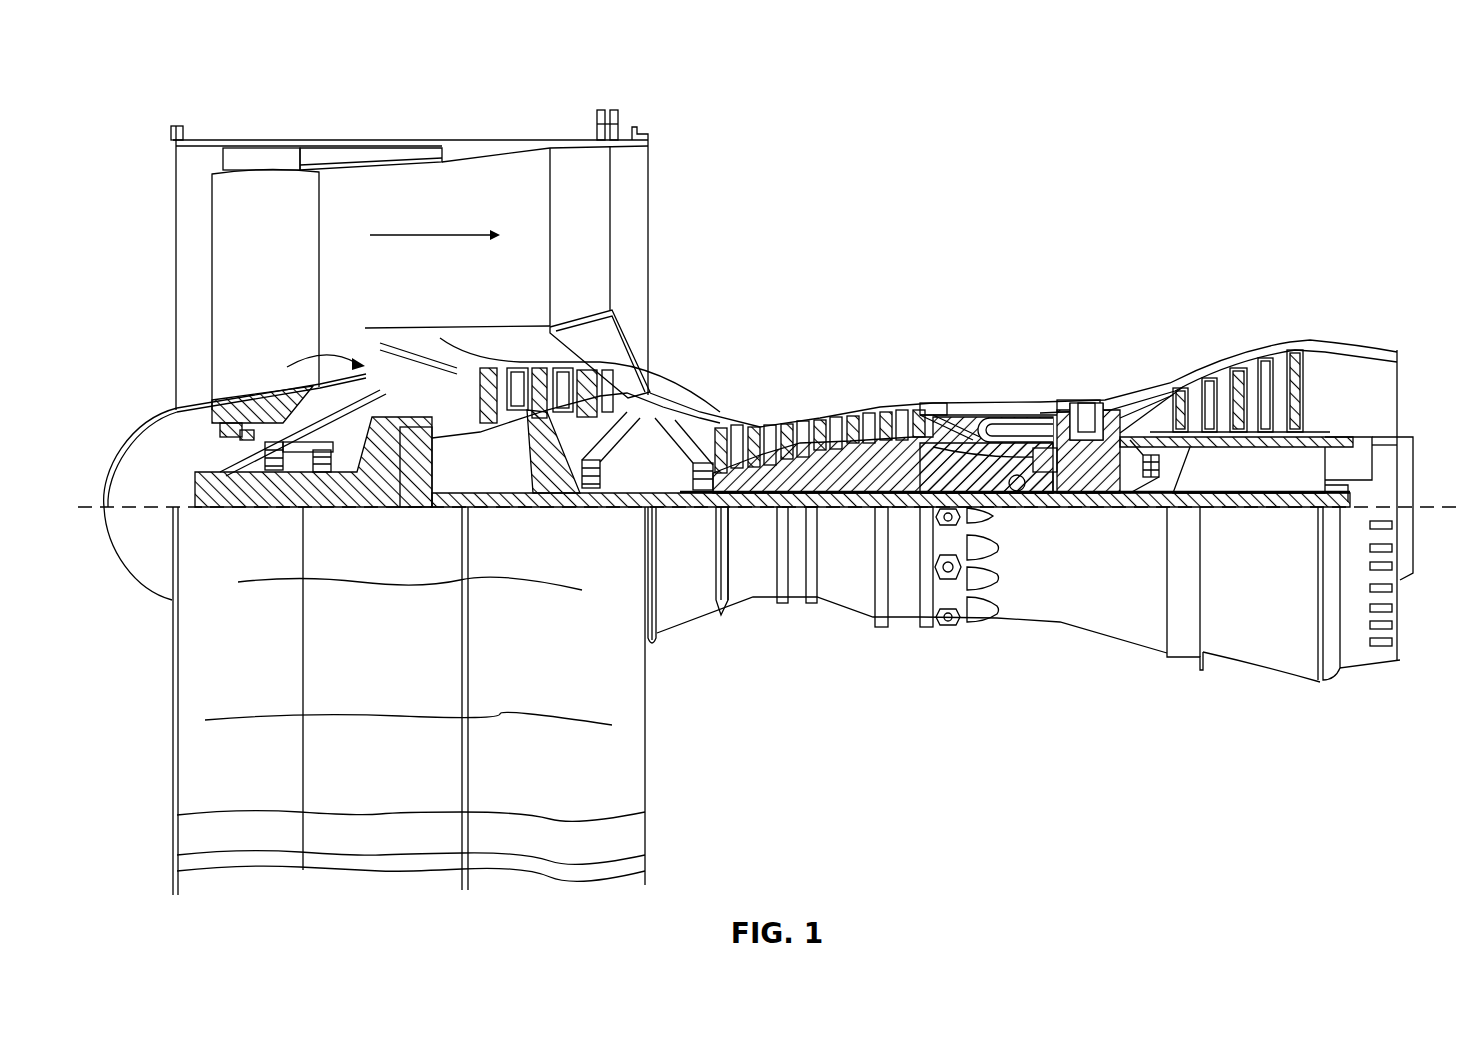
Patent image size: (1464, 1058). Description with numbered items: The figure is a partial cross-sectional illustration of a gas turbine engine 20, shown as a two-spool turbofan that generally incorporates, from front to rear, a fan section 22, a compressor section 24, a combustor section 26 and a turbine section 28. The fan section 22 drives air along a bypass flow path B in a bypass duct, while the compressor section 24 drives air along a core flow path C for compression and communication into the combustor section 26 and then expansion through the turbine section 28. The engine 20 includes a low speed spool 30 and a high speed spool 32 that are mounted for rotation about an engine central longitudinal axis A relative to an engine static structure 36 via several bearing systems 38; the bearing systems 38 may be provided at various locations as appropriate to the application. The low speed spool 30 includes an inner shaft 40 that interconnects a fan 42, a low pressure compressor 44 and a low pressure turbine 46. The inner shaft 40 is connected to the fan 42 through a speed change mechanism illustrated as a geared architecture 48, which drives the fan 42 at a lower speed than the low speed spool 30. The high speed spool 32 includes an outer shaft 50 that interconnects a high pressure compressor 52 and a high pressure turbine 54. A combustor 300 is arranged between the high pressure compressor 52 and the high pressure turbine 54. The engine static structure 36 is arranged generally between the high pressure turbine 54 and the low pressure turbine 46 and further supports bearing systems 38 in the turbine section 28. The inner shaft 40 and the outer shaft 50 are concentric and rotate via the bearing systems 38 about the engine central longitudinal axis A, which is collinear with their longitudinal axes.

The gas turbine engine 20 is at (1224, 174).
The fan section 22 is at (280, 124).
The compressor section 24 is at (842, 360).
The combustor section 26 is at (991, 360).
The turbine section 28 is at (1157, 340).
The low speed spool 30 is at (862, 516).
The high speed spool 32 is at (920, 455).
The engine static structure 36 is at (903, 632).
The bearing systems 38 is at (270, 478).
The inner shaft 40 is at (667, 508).
The fan 42 is at (262, 270).
The low pressure compressor 44 is at (562, 383).
The low pressure turbine 46 is at (1250, 363).
The geared architecture 48 is at (416, 470).
The outer shaft 50 is at (1030, 490).
The high pressure compressor 52 is at (828, 473).
The high pressure turbine 54 is at (1090, 400).
The combustor 300 is at (1010, 423).
The engine central longitudinal axis A is at (1422, 505).
The bypass flow path B is at (437, 235).
The core flow path C is at (287, 367).